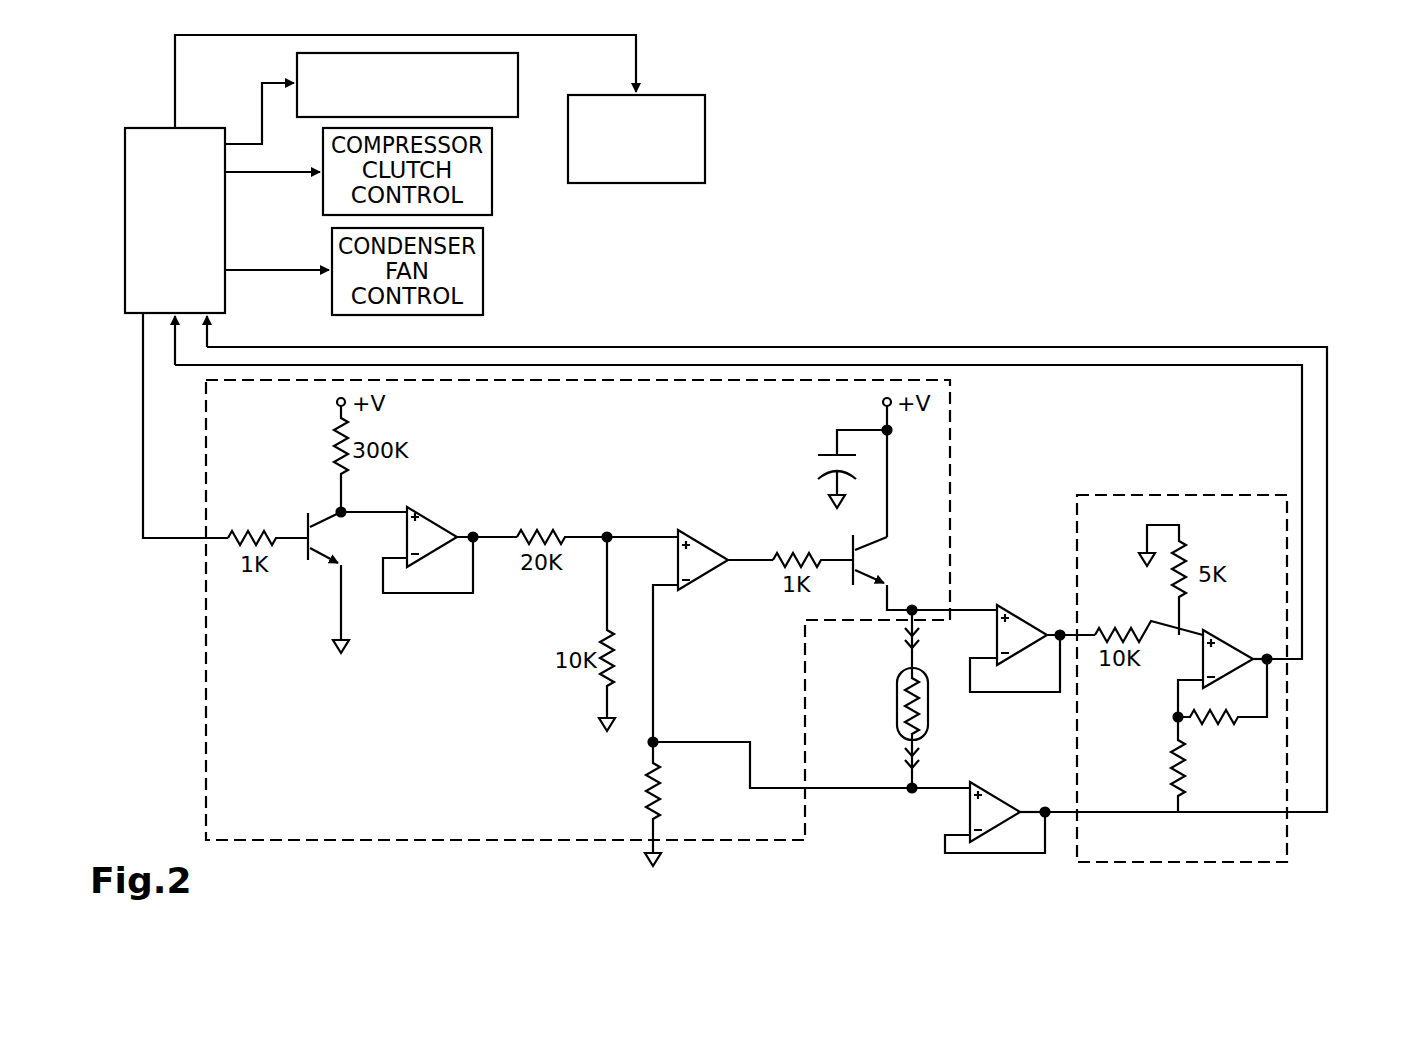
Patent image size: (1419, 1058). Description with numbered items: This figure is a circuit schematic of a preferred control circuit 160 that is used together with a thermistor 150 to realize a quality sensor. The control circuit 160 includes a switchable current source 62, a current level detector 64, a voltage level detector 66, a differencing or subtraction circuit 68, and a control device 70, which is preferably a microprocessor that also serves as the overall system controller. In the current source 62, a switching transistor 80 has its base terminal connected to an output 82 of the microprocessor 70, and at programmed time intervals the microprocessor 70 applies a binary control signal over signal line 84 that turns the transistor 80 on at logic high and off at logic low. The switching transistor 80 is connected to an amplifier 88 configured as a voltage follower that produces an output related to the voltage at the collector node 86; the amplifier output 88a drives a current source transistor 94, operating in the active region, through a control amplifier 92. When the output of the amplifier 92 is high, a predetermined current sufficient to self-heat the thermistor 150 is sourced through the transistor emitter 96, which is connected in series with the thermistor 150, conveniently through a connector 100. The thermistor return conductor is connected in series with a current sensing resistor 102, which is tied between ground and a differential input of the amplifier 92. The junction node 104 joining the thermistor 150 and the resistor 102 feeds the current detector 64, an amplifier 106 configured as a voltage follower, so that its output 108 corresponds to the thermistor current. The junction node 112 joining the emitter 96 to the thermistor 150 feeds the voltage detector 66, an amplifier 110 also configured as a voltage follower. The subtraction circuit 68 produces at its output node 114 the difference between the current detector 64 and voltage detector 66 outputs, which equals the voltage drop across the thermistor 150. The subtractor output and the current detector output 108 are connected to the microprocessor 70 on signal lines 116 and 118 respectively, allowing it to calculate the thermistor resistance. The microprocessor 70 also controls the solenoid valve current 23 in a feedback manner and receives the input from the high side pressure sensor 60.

The control device 70 is at (175, 220).
The current 23 is at (518, 100).
The high side pressure sensor 60 is at (705, 161).
The control circuit 160 is at (1103, 247).
The output 82 is at (130, 320).
The signal line 84 is at (143, 462).
The signal line 116 is at (1302, 500).
The signal line 118 is at (1327, 558).
The switchable current source 62 is at (444, 847).
The subtraction circuit 68 is at (1174, 866).
The switching transistor 80 is at (308, 520).
The collector node 86 is at (344, 507).
The amplifier 88 is at (417, 600).
The amplifier output 88a is at (473, 533).
The control amplifier 92 is at (708, 530).
The current source transistor 94 is at (850, 547).
The current source transistor emitter 96 is at (873, 573).
The junction node 112 is at (912, 606).
The connector 100 is at (921, 640).
The thermistor 150 is at (897, 700).
The current sensing resistor 102 is at (645, 814).
The junction node 104 is at (910, 791).
The amplifier 106 is at (1006, 798).
The current level detector 64 is at (981, 860).
The output 108 is at (1046, 817).
The amplifier 110 is at (1019, 611).
The voltage level detector 66 is at (1006, 697).
The output node 114 is at (1266, 652).